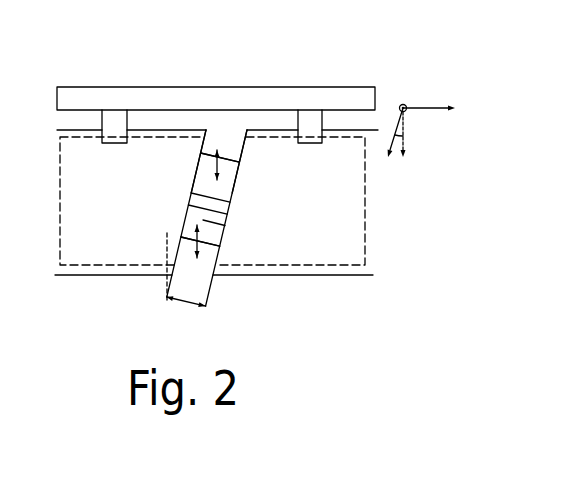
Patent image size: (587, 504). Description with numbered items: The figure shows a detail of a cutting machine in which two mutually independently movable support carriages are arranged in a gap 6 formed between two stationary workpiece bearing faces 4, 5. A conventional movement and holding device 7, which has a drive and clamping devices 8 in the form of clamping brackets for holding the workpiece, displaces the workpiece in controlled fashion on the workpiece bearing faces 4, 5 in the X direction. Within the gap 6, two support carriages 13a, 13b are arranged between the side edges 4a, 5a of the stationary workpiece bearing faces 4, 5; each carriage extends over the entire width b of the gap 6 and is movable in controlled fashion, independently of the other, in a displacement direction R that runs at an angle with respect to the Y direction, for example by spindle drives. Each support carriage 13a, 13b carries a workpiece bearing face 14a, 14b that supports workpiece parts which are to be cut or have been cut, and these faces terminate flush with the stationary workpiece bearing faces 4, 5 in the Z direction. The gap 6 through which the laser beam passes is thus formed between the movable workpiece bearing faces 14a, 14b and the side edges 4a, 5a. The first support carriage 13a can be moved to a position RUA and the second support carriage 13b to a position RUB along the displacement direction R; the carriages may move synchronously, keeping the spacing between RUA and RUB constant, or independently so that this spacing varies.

The workpiece bearing face 4 is at (80, 276).
The workpiece bearing face 5 is at (373, 243).
The side edge 4a is at (203, 145).
The side edge 5a is at (226, 150).
The gap 6 is at (189, 193).
The movement and holding device 7 is at (93, 98).
The clamping devices 8 is at (310, 118).
The first support carriage 13a is at (170, 215).
The second support carriage 13b is at (247, 184).
The workpiece bearing face 14a is at (225, 182).
The workpiece bearing face 14b is at (240, 181).
The position of the second support carriage RUB is at (200, 156).
The position of the first support carriage RUA is at (208, 245).
The width of the gap b is at (186, 291).
The displacement direction R is at (396, 128).